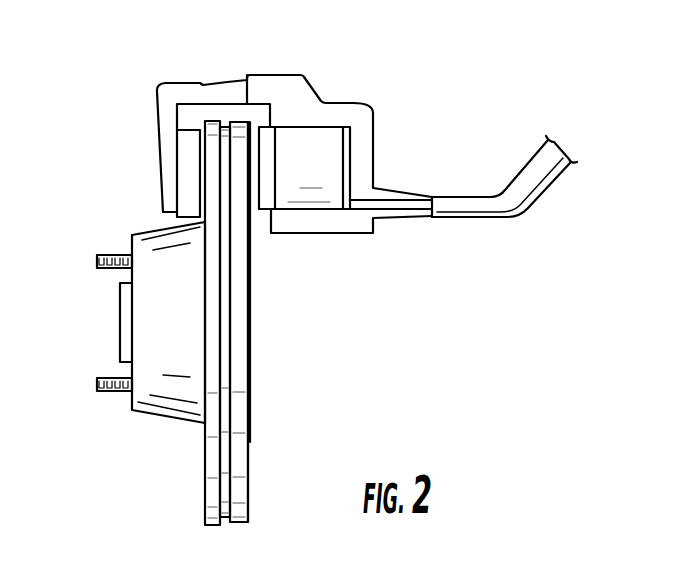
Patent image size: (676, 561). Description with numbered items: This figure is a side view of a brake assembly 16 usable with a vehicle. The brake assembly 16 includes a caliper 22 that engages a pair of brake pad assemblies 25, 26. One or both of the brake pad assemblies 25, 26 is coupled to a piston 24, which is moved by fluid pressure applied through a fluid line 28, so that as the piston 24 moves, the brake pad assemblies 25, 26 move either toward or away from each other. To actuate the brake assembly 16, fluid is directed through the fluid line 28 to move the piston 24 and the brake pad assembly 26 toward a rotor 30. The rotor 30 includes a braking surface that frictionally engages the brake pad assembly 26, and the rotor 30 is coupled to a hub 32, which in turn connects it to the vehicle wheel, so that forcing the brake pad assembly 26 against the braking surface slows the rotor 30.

The brake assembly 16 is at (521, 88).
The caliper 22 is at (162, 105).
The piston 24 is at (345, 145).
The brake pad assembly 25 is at (185, 178).
The brake pad assembly 26 is at (264, 203).
The fluid line 28 is at (483, 205).
The rotor 30 is at (248, 333).
The hub 32 is at (152, 323).